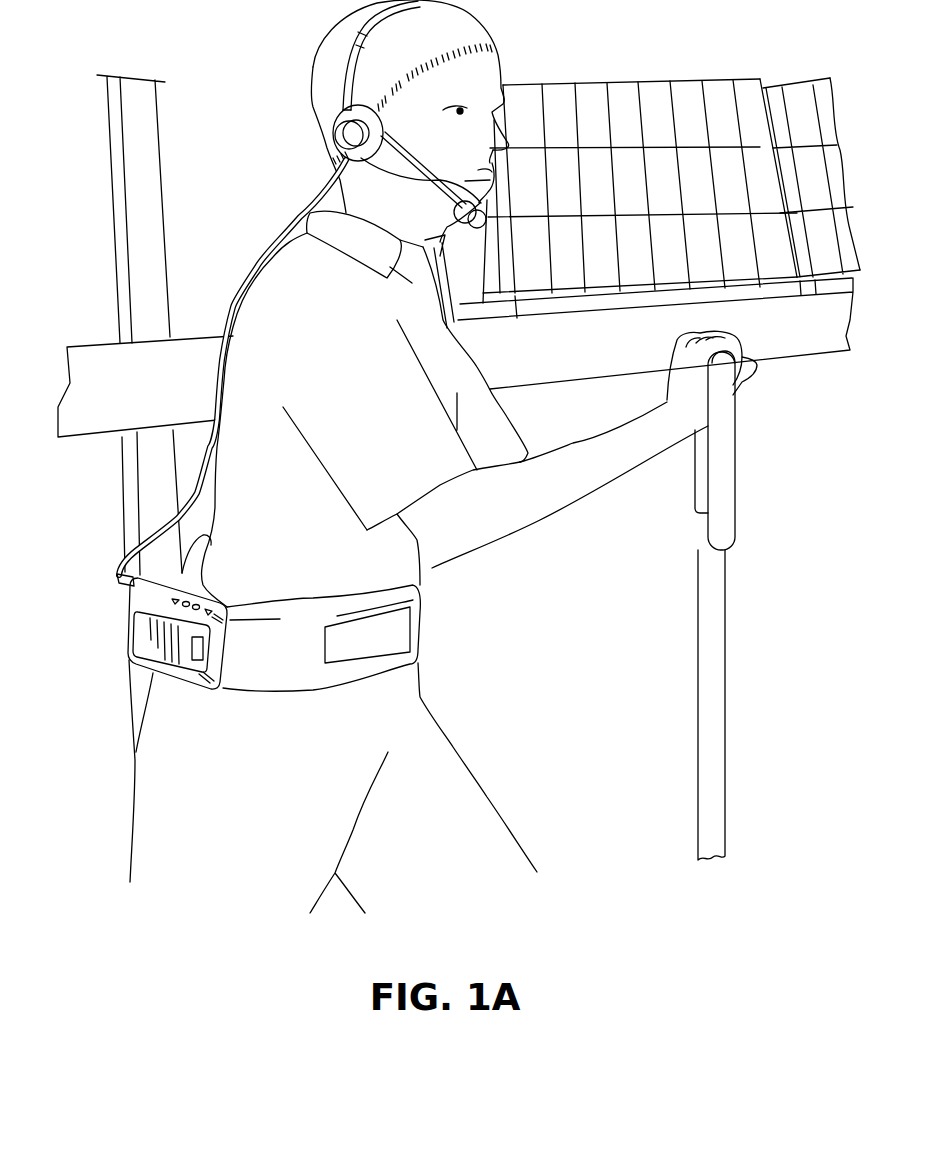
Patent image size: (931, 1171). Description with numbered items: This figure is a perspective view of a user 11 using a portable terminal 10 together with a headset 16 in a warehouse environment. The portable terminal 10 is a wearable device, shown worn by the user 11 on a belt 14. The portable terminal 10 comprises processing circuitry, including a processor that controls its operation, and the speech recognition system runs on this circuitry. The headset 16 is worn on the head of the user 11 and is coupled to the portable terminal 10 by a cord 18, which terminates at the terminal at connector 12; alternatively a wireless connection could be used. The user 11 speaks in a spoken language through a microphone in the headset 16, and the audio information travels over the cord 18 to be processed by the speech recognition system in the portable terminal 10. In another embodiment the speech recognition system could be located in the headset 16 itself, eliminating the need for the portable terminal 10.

The portable terminal 10 is at (148, 677).
The user 11 is at (345, 373).
The connector 12 is at (123, 590).
The belt 14 is at (420, 630).
The headset 16 is at (341, 118).
The cord 18 is at (217, 382).